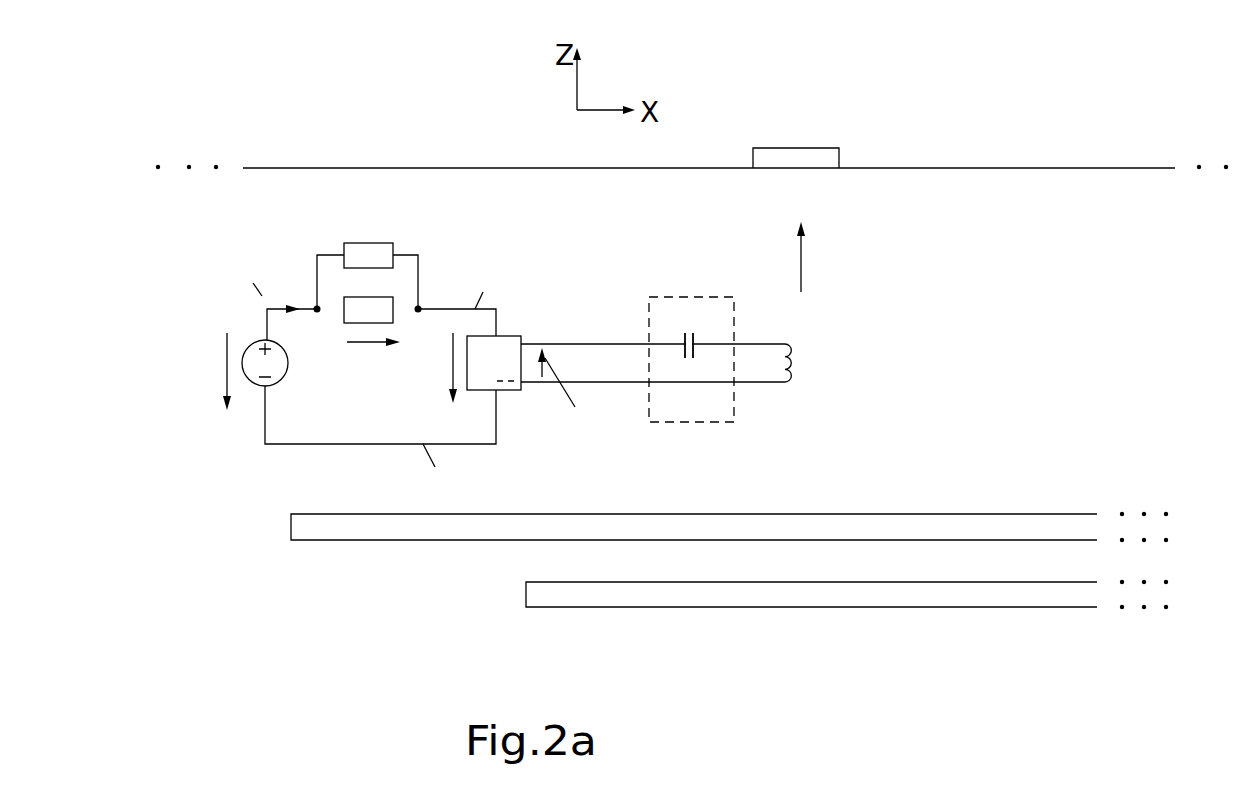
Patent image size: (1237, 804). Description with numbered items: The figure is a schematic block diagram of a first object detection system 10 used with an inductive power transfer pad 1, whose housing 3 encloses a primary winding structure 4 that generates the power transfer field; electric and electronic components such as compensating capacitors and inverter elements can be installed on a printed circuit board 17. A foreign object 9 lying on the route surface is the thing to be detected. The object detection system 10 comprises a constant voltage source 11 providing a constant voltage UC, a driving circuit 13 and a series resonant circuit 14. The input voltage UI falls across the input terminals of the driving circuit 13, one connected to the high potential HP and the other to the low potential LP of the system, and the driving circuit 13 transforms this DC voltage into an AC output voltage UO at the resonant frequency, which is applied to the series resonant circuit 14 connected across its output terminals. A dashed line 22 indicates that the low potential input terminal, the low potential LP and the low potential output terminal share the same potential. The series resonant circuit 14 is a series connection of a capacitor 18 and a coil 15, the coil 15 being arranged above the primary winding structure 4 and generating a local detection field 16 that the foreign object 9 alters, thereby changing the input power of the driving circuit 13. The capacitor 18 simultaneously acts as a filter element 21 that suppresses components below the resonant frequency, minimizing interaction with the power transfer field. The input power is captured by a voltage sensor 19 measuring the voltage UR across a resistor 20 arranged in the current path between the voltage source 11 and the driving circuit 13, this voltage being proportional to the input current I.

The inductive power transfer pad 1 is at (1083, 372).
The housing 3 is at (1075, 167).
The primary winding structure 4 is at (895, 523).
The foreign object 9 is at (816, 155).
The object detection system 10 is at (278, 478).
The voltage source 11 is at (284, 373).
The driving circuit 13 is at (512, 336).
The series resonant circuit 14 is at (589, 344).
The coil 15 is at (792, 353).
The detection field 16 is at (801, 263).
The printed circuit board 17 is at (914, 595).
The capacitor 18 is at (685, 337).
The voltage sensor 19 is at (368, 255).
The resistor 20 is at (385, 309).
The filter element 21 is at (723, 297).
The dashed line 22 is at (510, 383).